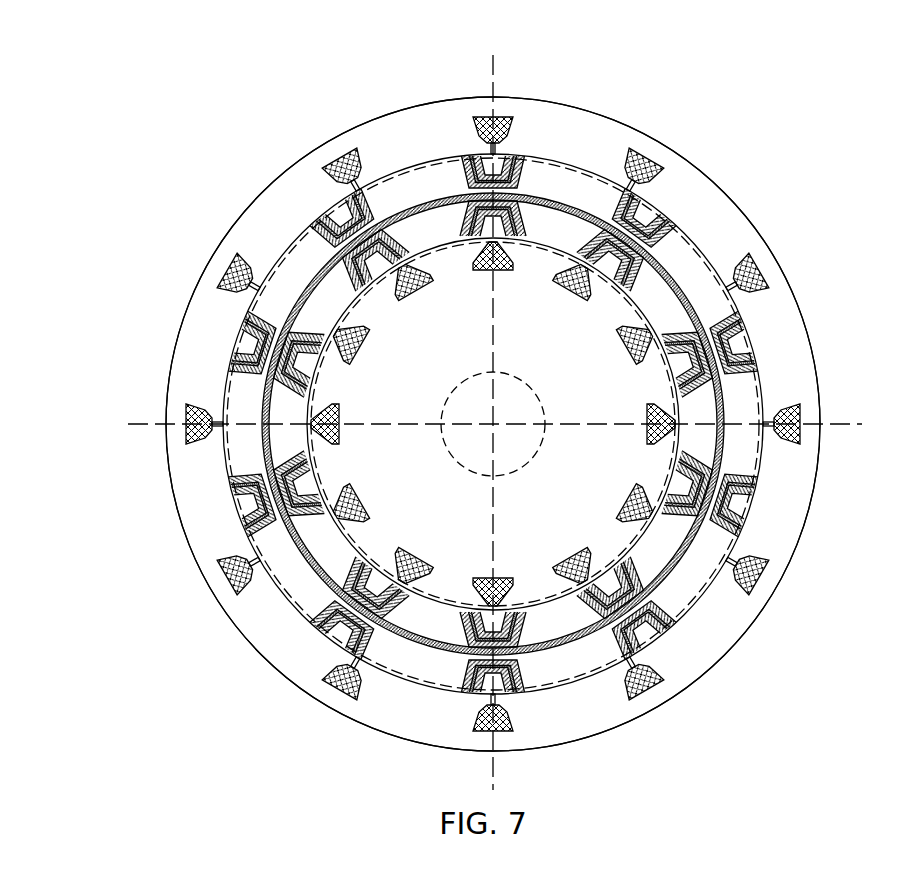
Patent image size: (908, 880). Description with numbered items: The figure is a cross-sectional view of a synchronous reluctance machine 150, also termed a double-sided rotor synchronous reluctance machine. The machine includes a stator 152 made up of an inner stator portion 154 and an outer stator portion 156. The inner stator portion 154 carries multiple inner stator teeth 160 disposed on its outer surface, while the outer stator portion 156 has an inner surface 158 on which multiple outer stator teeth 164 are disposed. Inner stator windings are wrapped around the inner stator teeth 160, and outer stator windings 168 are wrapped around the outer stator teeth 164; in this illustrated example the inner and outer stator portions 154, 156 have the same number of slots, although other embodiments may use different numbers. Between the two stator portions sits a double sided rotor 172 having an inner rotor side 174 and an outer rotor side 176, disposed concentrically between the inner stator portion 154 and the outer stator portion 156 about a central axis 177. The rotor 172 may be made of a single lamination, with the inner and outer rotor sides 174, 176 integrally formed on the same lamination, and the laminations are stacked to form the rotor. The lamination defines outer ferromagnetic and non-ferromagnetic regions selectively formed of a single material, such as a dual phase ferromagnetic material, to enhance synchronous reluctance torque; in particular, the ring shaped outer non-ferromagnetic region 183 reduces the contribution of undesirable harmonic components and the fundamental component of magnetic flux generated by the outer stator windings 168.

The synchronous reluctance machine 150 is at (802, 90).
The stator 152 is at (742, 203).
The inner stator portion 154 is at (623, 310).
The outer stator portion 156 is at (790, 315).
The inner surface 158 is at (597, 165).
The inner stator teeth 160 is at (455, 578).
The outer stator teeth 164 is at (263, 233).
The outer stator windings 168 is at (197, 403).
The double sided rotor 172 is at (412, 183).
The inner rotor side 174 is at (392, 516).
The outer rotor side 176 is at (352, 527).
The central axis 177 is at (837, 422).
The outer non-ferromagnetic region 183 is at (672, 572).